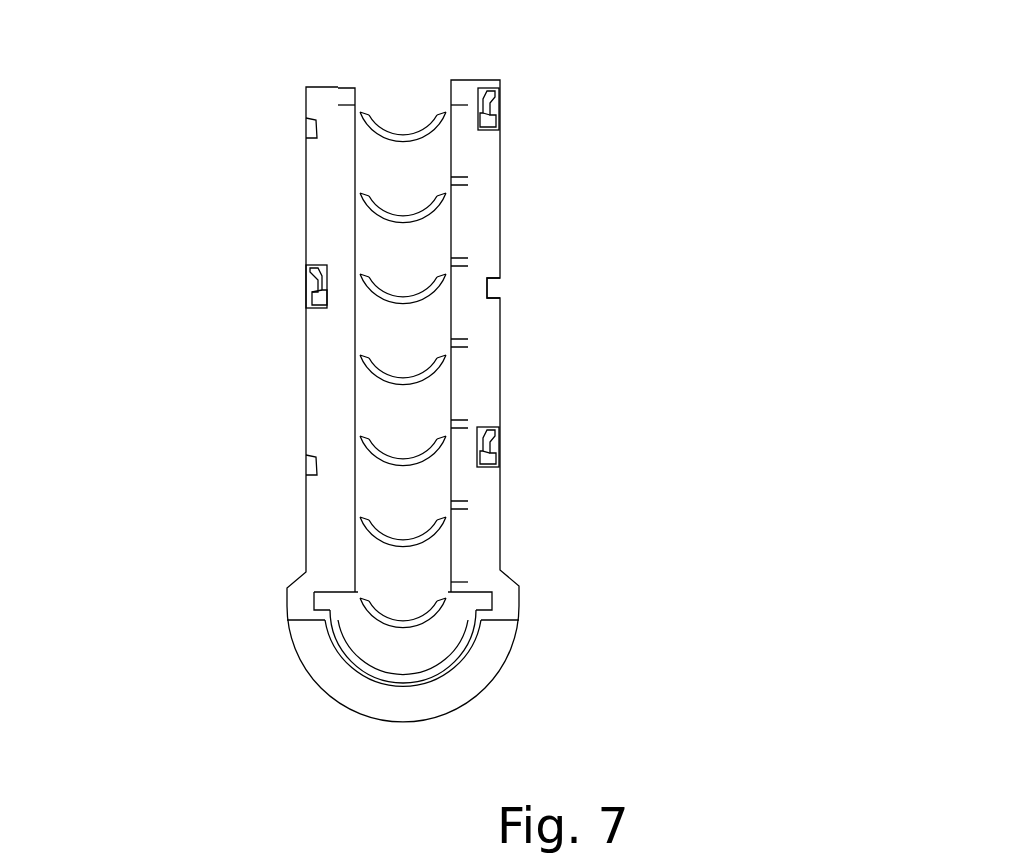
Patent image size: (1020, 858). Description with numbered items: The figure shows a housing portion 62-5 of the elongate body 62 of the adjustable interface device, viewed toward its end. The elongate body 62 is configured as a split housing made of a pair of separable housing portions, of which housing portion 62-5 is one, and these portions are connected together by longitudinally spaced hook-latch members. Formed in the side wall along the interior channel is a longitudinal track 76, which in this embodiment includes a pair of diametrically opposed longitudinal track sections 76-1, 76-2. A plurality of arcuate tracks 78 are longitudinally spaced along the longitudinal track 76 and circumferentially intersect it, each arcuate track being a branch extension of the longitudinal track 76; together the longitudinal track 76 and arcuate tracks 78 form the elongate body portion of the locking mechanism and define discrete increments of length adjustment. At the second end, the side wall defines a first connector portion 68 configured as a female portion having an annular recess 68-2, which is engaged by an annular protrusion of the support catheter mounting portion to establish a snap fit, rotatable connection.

The elongate body 62 is at (80, 276).
The housing portion 62-5 is at (501, 333).
The first connector portion 68 is at (424, 611).
The annular recess 68-2 is at (490, 592).
The longitudinal track 76 is at (316, 306).
The longitudinal track section 76-1 is at (346, 108).
The longitudinal track section 76-2 is at (462, 95).
The arcuate tracks 78 is at (412, 142).